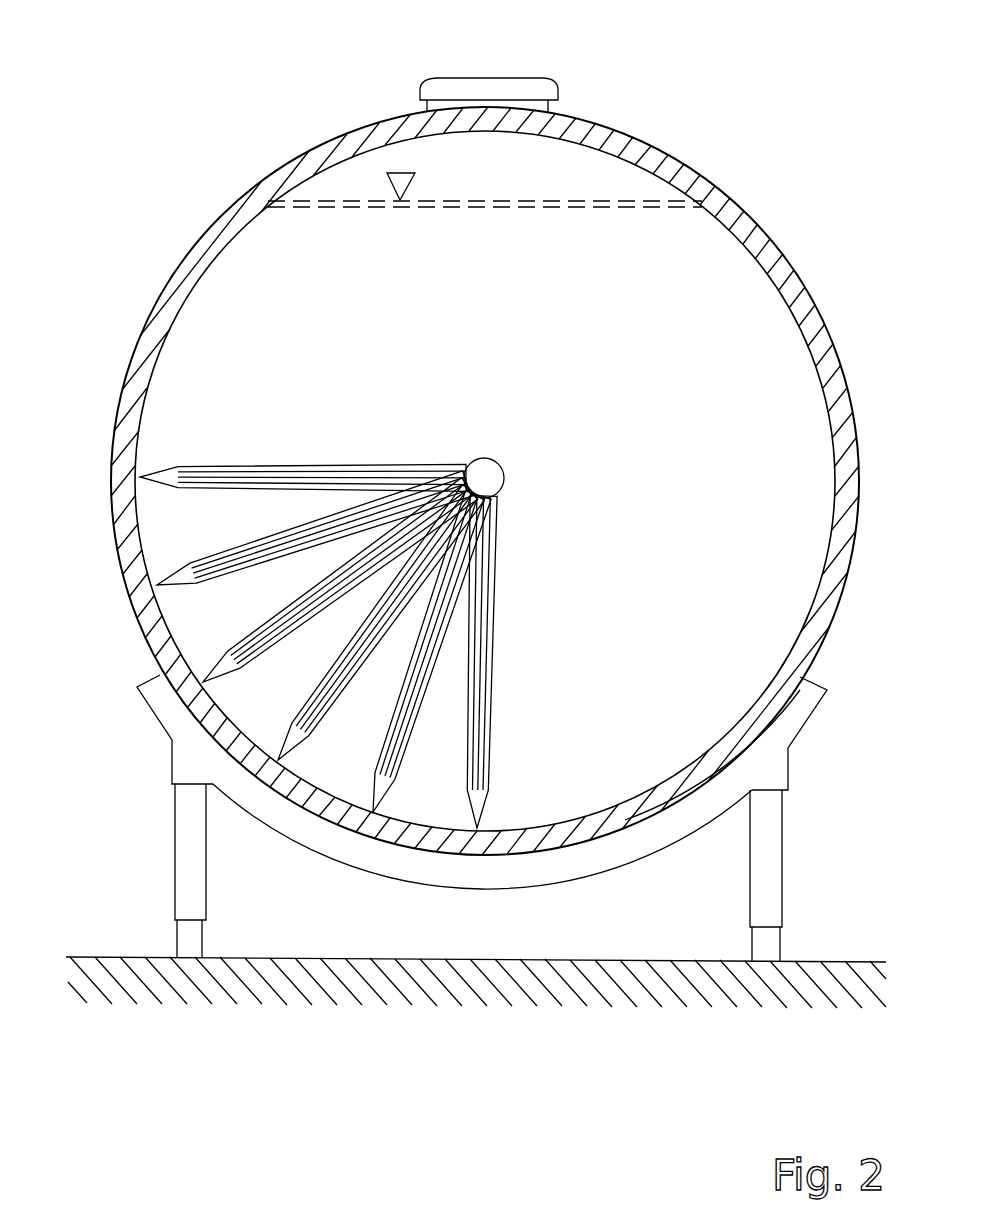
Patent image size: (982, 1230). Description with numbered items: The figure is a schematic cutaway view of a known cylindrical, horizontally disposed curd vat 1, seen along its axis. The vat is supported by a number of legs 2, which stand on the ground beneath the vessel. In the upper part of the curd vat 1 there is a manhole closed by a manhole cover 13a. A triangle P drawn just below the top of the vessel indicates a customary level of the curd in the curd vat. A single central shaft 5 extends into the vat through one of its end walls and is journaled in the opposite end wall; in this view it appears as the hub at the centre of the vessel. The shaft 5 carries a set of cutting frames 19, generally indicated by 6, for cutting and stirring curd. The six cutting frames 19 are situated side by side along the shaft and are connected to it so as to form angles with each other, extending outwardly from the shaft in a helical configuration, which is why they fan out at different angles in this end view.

The curd vat 1 is at (842, 368).
The legs 2 is at (188, 858).
The shaft 5 is at (485, 478).
The set of cutting frames 6 is at (368, 610).
The manhole cover 13a is at (490, 88).
The cutting frames 19 is at (253, 468).
The triangle indicating level of curd P is at (413, 183).